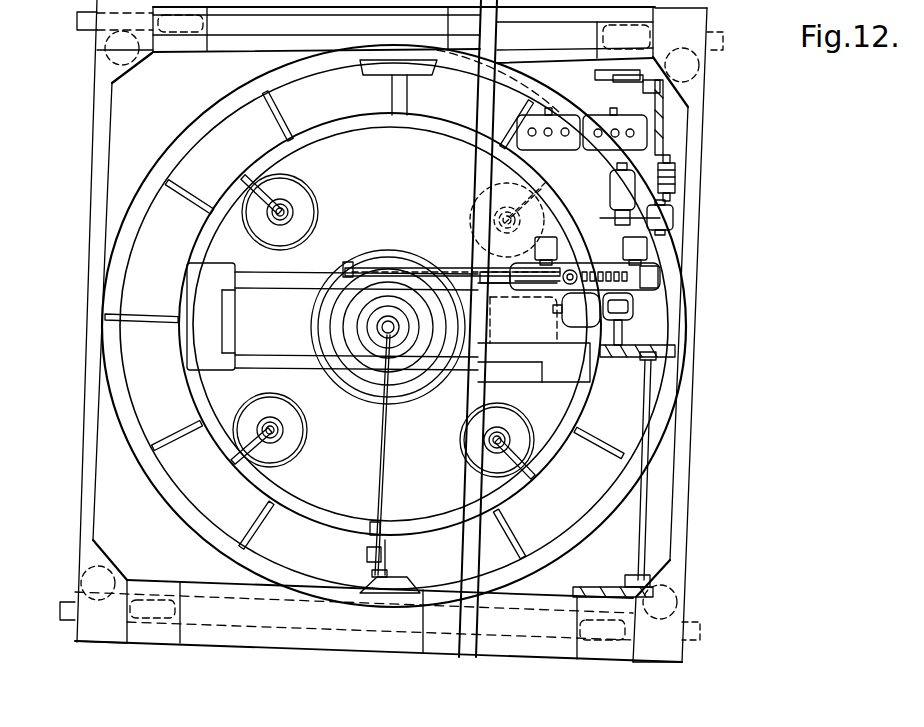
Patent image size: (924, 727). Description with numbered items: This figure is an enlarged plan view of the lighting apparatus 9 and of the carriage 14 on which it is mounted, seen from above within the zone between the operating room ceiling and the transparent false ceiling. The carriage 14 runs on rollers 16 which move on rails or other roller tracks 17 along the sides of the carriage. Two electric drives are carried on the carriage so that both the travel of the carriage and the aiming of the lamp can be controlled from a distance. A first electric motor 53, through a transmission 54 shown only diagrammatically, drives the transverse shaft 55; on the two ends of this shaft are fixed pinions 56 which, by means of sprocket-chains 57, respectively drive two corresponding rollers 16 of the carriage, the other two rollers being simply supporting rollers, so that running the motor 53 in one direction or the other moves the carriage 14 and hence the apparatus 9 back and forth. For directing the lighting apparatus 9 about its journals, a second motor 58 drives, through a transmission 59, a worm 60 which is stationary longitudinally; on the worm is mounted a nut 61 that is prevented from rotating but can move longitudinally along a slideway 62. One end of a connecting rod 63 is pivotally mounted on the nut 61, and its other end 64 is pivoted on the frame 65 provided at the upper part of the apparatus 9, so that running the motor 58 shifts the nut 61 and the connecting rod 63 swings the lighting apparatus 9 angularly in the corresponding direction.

The lighting apparatus 9 is at (175, 137).
The carriage 14 is at (700, 53).
The rollers 16 is at (178, 27).
The roller tracks 17 is at (238, 25).
The first electric motor 53 is at (623, 323).
The transmission 54 is at (620, 356).
The transverse shaft 55 is at (663, 128).
The pinions 56 is at (647, 80).
The sprocket-chains 57 is at (600, 75).
The second motor 58 is at (656, 182).
The transmission 59 is at (673, 223).
The worm 60 is at (660, 293).
The nut 61 is at (578, 270).
The slideway 62 is at (558, 257).
The connecting rod 63 is at (447, 268).
The other end of connecting rod 64 is at (344, 262).
The frame 65 is at (278, 280).